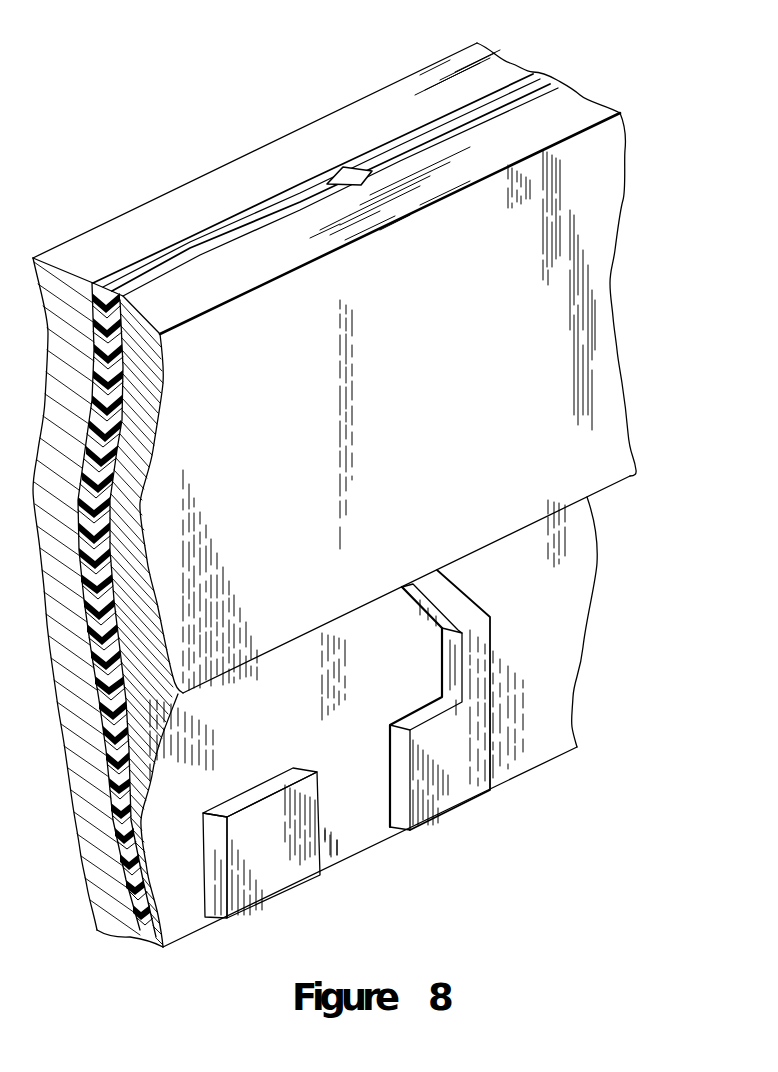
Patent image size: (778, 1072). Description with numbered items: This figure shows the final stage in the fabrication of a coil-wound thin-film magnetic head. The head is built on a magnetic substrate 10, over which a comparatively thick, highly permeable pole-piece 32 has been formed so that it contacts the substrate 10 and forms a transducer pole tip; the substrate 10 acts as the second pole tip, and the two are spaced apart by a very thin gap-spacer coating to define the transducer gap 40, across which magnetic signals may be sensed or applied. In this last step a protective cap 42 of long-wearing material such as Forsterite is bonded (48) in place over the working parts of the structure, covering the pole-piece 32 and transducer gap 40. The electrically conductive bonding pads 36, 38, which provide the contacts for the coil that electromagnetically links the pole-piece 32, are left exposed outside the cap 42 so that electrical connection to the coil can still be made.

The magnetic substrate 10 is at (403, 76).
The pole-piece 32 is at (322, 182).
The bonding pad 36 is at (282, 888).
The bonding pad 38 is at (463, 801).
The transducer gap 40 is at (335, 181).
The protective cap 42 is at (462, 396).
The bond 48 is at (200, 253).